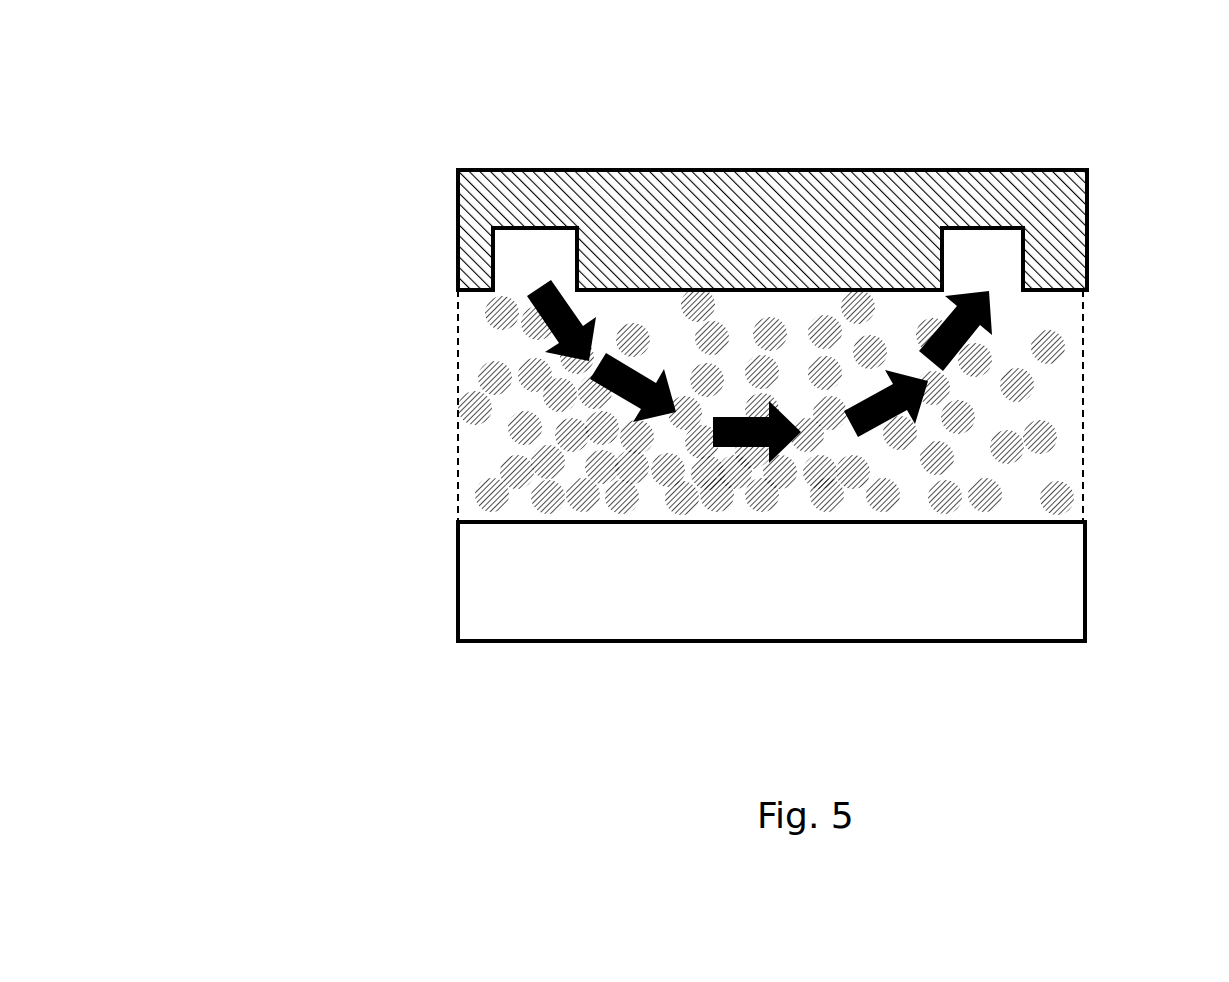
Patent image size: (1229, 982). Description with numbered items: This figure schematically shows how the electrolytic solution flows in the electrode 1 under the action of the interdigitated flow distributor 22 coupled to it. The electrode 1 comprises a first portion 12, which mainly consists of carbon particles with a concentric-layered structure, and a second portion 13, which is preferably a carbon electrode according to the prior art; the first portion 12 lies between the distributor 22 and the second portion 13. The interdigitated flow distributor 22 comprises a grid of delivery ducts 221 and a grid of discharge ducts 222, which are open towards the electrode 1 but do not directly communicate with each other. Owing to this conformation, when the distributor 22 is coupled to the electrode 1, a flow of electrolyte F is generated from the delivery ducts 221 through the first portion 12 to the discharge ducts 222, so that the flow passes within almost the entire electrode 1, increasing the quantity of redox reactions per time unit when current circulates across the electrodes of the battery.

The electrode 1 is at (357, 243).
The first portion 12 is at (1095, 290).
The second portion 13 is at (1085, 582).
The interdigitated flow distributor 22 is at (1016, 170).
The delivery ducts 221 is at (560, 275).
The discharge ducts 222 is at (1010, 275).
The flow of electrolyte F is at (990, 300).